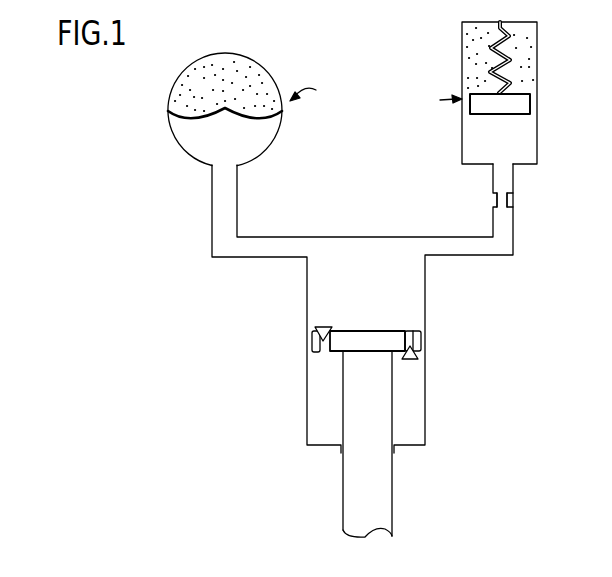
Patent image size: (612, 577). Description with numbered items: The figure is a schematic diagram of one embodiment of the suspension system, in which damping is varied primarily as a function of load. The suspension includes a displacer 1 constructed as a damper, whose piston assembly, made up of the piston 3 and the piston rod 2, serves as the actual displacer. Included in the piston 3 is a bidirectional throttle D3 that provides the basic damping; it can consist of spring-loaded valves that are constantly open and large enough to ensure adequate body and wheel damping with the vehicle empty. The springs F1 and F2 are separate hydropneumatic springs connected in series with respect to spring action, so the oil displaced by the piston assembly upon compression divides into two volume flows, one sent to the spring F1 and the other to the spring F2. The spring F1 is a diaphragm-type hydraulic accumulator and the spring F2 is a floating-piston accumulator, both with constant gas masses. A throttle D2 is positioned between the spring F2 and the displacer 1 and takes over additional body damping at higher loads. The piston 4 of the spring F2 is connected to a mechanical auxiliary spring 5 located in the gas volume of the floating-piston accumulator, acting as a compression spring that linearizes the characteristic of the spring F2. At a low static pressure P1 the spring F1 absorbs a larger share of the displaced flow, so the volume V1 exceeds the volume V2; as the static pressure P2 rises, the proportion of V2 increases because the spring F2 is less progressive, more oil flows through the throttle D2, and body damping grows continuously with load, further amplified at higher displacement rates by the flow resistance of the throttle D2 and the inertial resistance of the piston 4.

The displacer 1 is at (297, 353).
The piston rod 2 is at (357, 484).
The piston 3 is at (388, 335).
The piston of spring F2 4 is at (523, 104).
The mechanical auxiliary spring 5 is at (510, 50).
The volume flow to spring F1 V1 is at (263, 80).
The volume flow to spring F2 V2 is at (470, 50).
The spring F1 is at (308, 106).
The spring F2 is at (438, 102).
The pressure P1 is at (254, 142).
The pressure P2 is at (472, 143).
The throttle D2 is at (496, 199).
The bidirectional throttle D3 is at (320, 326).